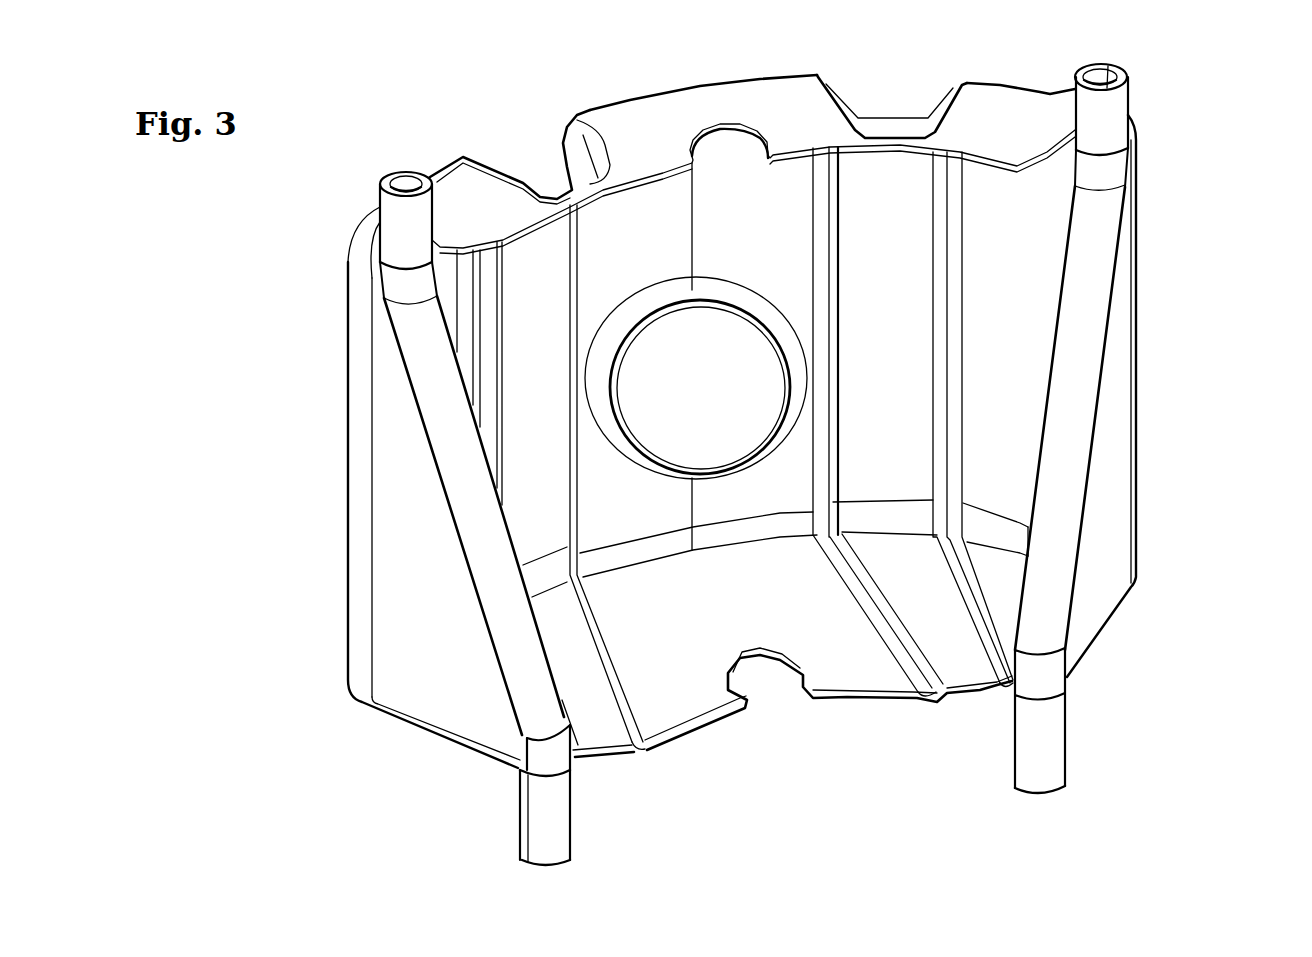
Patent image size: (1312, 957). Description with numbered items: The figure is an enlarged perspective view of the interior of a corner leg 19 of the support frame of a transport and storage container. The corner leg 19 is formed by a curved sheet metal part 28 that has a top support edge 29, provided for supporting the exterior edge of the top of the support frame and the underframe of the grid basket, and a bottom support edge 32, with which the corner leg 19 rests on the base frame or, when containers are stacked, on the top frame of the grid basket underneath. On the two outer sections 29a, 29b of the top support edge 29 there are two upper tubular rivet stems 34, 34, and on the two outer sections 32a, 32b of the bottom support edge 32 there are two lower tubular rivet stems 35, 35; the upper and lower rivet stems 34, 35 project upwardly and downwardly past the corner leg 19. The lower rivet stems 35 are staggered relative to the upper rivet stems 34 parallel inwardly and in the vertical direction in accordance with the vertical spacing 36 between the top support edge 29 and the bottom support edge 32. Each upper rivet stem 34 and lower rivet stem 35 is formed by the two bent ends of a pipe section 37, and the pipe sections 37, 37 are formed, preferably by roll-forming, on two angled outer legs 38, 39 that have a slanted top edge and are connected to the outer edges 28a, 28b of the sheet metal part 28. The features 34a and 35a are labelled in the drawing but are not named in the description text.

The corner leg 19 is at (822, 58).
The top support edge 29 is at (633, 122).
The outer section of the top support edge 29a is at (452, 200).
The outer section of the top support edge 29b is at (1055, 125).
The sheet metal part 28 is at (1025, 245).
The outer edge of the sheet metal part 28a is at (355, 405).
The outer edge of the sheet metal part 28b is at (1140, 287).
The upper tubular rivet stem 34 is at (400, 222).
The upper post opening 34a is at (382, 182).
The vertical spacing 36 is at (883, 158).
The pipe section 37 is at (460, 475).
The angled outer leg 38 is at (395, 523).
The angled outer leg 39 is at (1118, 465).
The bottom support edge 32 is at (820, 643).
The outer section of the bottom support edge 32a is at (490, 713).
The outer section of the bottom support edge 32b is at (1010, 612).
The lower tubular rivet stem 35 is at (524, 863).
The lower post end 35a is at (562, 865).